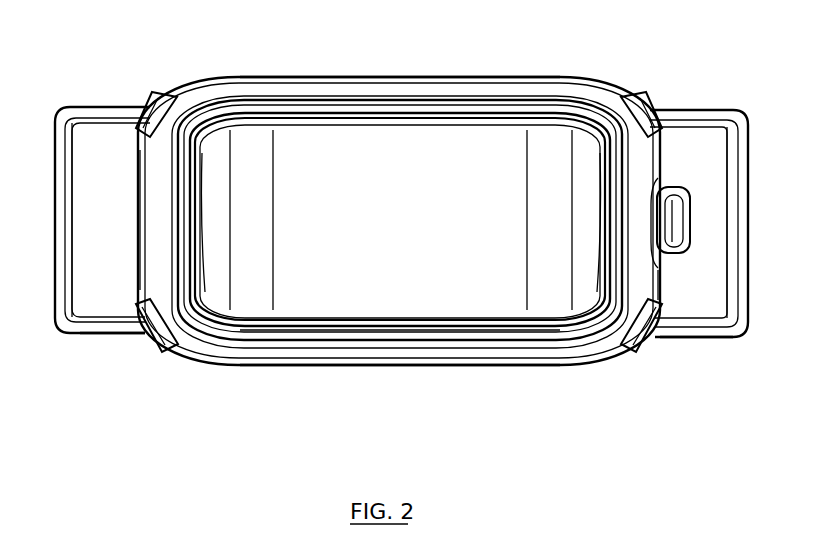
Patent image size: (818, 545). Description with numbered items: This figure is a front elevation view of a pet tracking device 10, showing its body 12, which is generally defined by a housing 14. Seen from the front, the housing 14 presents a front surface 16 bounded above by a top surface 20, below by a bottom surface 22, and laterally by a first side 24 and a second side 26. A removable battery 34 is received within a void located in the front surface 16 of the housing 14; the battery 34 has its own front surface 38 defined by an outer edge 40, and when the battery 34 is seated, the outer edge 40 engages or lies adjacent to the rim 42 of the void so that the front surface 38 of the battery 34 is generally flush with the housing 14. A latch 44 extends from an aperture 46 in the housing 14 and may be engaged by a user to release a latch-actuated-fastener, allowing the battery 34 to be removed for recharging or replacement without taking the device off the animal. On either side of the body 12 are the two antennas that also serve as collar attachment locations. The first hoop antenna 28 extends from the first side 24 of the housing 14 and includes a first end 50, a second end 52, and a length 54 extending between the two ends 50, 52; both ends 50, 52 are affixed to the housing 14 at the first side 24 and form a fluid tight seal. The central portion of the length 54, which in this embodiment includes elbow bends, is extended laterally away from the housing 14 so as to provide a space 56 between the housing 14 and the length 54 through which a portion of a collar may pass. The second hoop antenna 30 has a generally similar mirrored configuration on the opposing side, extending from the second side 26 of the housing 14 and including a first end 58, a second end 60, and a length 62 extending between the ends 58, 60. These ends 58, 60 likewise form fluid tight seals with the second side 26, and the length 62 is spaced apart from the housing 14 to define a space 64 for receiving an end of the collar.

The pet tracking device 10 is at (722, 53).
The body 12 is at (505, 415).
The housing 14 is at (262, 90).
The front surface 16 is at (315, 333).
The top surface 20 is at (487, 76).
The bottom surface 22 is at (398, 370).
The first side 24 is at (136, 235).
The second side 26 is at (663, 296).
The first hoop antenna 28 is at (90, 336).
The second hoop antenna 30 is at (715, 334).
The removable battery 34 is at (330, 145).
The front surface 38 is at (414, 228).
The outer edge 40 is at (444, 118).
The rim 42 is at (382, 115).
The latch 44 is at (685, 222).
The aperture 46 is at (665, 186).
The first end 50 is at (146, 102).
The second end 52 is at (141, 340).
The length 54 is at (55, 260).
The space 56 is at (98, 210).
The first end 58 is at (672, 108).
The second end 60 is at (660, 340).
The length 62 is at (742, 226).
The space 64 is at (720, 188).